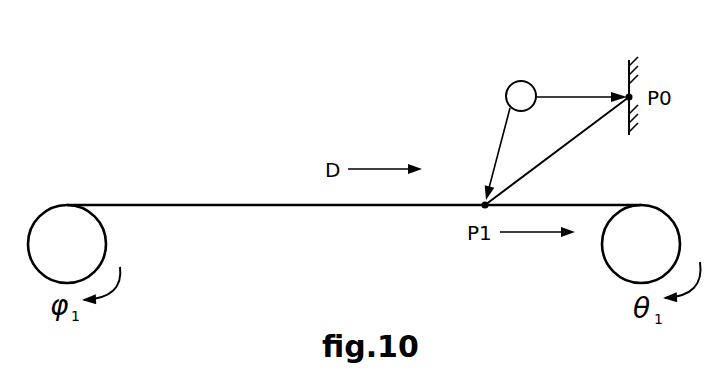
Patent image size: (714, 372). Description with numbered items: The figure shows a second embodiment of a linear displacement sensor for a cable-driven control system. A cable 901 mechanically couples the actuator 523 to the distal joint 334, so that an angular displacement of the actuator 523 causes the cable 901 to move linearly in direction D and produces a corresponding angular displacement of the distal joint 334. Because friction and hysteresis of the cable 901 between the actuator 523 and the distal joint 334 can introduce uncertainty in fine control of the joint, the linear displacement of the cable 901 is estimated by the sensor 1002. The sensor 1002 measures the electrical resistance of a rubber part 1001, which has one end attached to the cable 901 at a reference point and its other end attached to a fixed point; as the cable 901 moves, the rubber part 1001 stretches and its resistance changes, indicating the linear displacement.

The cable 901 is at (144, 205).
The actuator 523 is at (43, 256).
The distal joint 334 is at (620, 256).
The rubber part 1001 is at (567, 143).
The sensor 1002 is at (546, 56).